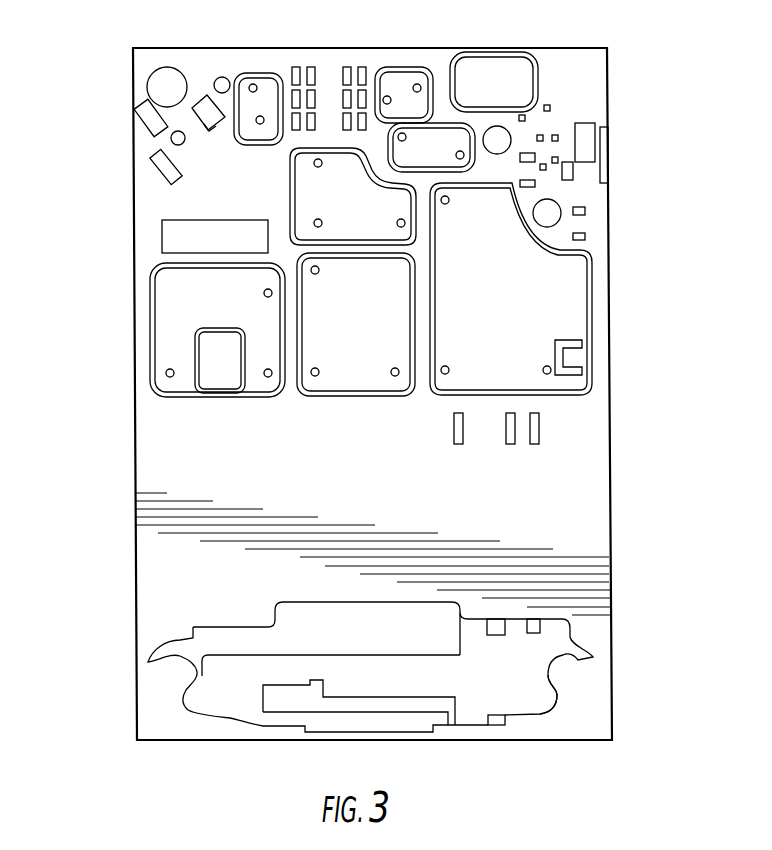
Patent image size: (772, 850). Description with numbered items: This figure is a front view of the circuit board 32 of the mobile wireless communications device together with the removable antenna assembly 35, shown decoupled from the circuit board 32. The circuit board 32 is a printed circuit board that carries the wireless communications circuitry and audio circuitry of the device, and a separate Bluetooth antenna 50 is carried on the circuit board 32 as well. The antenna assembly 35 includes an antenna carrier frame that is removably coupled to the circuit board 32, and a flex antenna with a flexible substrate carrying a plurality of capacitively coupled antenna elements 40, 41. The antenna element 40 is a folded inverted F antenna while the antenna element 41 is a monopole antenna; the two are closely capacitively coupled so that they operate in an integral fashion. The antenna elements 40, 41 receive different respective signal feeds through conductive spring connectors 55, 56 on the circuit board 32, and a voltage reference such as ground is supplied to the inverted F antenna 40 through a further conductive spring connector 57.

The circuit board 32 is at (622, 57).
The Bluetooth antenna 50 is at (133, 420).
The antenna assembly 35 is at (627, 652).
The antenna element 40 is at (505, 721).
The antenna element 41 is at (540, 695).
The conductive spring connector 55 is at (510, 444).
The conductive spring connector 56 is at (535, 444).
The conductive spring connector 57 is at (459, 444).